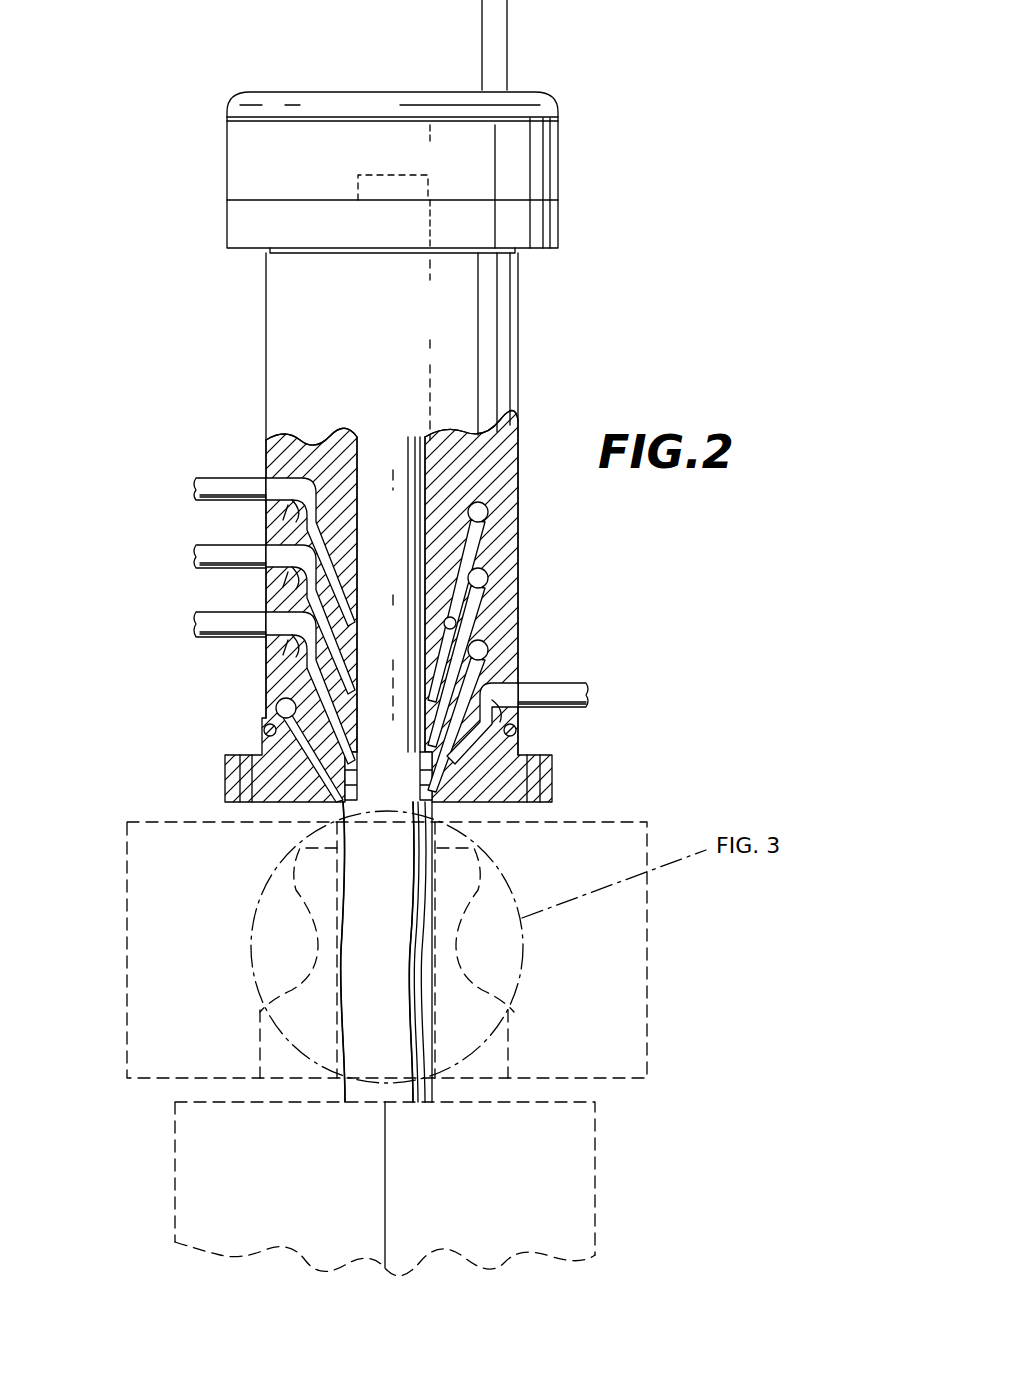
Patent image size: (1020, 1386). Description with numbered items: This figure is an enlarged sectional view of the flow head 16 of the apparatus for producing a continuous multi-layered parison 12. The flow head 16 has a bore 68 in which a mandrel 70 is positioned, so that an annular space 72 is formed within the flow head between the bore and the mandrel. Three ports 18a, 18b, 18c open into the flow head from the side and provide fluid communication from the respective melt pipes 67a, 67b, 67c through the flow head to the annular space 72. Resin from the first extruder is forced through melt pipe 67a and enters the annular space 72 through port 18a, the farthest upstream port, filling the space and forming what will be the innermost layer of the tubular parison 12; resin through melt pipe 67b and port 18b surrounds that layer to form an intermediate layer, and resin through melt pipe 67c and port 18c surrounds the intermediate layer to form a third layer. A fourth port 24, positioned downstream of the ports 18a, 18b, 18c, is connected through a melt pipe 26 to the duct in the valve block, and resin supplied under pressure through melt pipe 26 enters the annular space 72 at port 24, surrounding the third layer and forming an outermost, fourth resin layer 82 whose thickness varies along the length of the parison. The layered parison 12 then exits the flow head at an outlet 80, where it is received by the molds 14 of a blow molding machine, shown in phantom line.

The parison 12 is at (382, 906).
The molds 14 is at (648, 1034).
The flow head 16 is at (512, 328).
The port 18a is at (270, 518).
The port 18b is at (270, 585).
The port 18c is at (272, 660).
The fourth port 24 is at (500, 700).
The melt pipe 26 is at (568, 690).
The melt pipe 67a is at (205, 492).
The melt pipe 67b is at (205, 560).
The melt pipe 67c is at (205, 630).
The bore 68 is at (443, 483).
The mandrel 70 is at (395, 533).
The annular space 72 is at (430, 690).
The outlet 80 is at (470, 808).
The fourth resin layer 82 is at (343, 818).